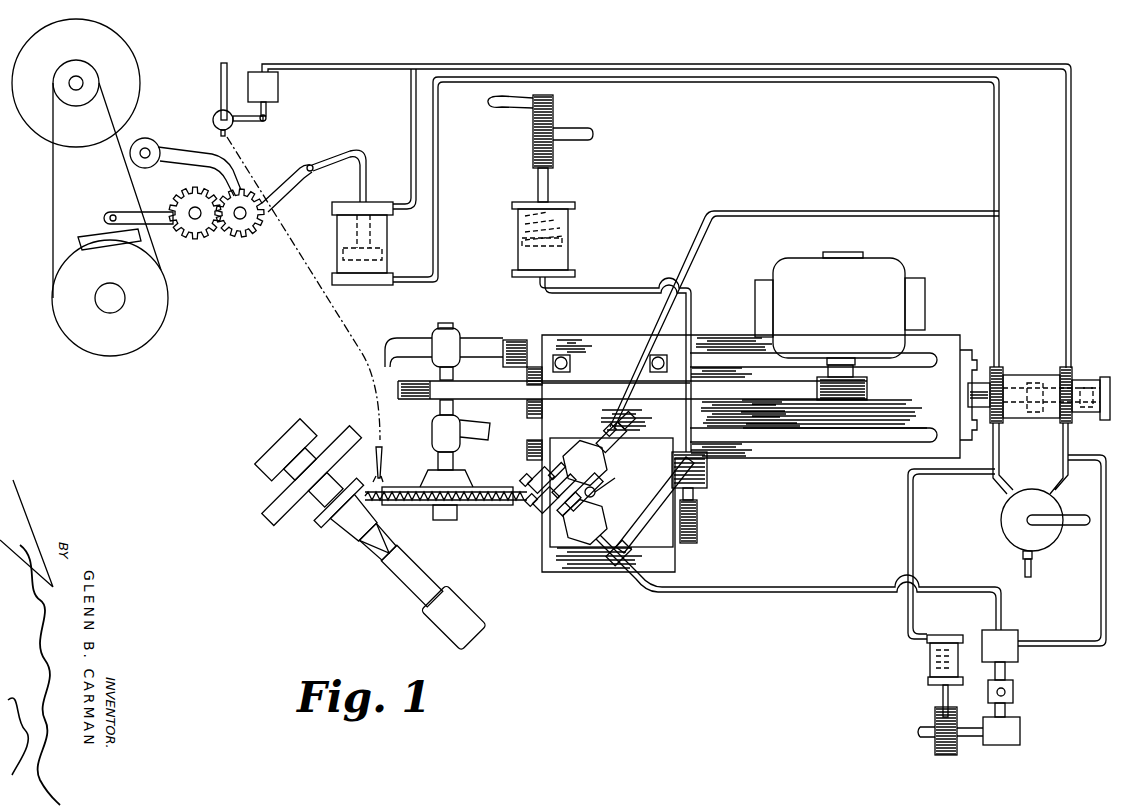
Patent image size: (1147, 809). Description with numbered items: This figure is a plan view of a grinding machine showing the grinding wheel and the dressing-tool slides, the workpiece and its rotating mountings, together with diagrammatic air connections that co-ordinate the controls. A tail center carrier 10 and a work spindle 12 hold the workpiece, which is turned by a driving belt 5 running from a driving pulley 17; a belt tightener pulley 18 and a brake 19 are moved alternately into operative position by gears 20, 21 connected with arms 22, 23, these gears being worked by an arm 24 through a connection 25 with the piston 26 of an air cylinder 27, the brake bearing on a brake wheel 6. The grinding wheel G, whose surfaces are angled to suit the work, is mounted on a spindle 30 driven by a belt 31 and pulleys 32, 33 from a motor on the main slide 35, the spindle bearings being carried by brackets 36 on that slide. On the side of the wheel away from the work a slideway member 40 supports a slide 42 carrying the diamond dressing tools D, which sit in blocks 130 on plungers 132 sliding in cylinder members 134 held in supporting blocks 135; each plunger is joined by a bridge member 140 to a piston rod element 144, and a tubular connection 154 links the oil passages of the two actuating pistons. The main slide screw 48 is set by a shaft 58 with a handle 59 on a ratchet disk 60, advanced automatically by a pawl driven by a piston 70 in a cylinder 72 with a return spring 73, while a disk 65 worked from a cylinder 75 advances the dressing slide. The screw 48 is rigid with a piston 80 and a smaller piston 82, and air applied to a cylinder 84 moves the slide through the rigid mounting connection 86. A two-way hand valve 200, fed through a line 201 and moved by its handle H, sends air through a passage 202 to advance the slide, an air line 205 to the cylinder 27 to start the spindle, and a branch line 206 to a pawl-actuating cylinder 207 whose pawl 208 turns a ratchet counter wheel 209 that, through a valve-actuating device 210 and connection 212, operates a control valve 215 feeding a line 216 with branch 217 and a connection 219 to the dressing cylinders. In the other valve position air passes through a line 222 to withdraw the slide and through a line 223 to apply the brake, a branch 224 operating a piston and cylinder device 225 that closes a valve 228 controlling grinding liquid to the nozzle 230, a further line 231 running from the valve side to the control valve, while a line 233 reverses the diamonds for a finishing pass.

The belt 5 is at (50, 220).
The brake wheel 6 is at (63, 258).
The tail center carrier 10 is at (415, 592).
The work spindle 12 is at (125, 298).
The driving pulley 17 is at (88, 105).
The belt tightener pulley 18 is at (152, 140).
The brake 19 is at (90, 230).
The gear 20 is at (198, 238).
The gear 21 is at (246, 236).
The arm 22 is at (200, 161).
The arm 23 is at (165, 202).
The arm 24 is at (283, 200).
The connection 25 is at (353, 153).
The piston 26 is at (373, 255).
The air cylinder 27 is at (350, 285).
The spindle 30 is at (453, 461).
The belt 31 is at (600, 395).
The pulley 32 is at (465, 384).
The pulley 33 is at (856, 400).
The main slide 35 is at (751, 412).
The brackets 36 is at (398, 338).
The mounting bracket or slideway member 40 is at (616, 387).
The slide 42 is at (577, 445).
The main slide screw 48 is at (985, 398).
The shaft 58 is at (592, 128).
The handle 59 is at (489, 100).
The disk or wheel 60 is at (533, 138).
The disk 65 is at (697, 531).
The piston 70 is at (522, 243).
The cylinder 72 is at (531, 239).
The spring 73 is at (522, 213).
The cylinder 75 is at (707, 469).
The piston 80 is at (1034, 382).
The piston 82 is at (1086, 386).
The cylinder 84 is at (1050, 368).
The rigid mounting connection 86 is at (977, 372).
The blocks 130 is at (535, 470).
The plungers 132 is at (558, 526).
The elongated cylinder members 134 is at (612, 452).
The supporting blocks 135 is at (575, 455).
The bridge member 140 is at (641, 418).
The piston rod element 144 is at (636, 436).
The tubular connection 154 is at (595, 496).
The two-way hand valve 200 is at (1023, 536).
The line 201 is at (1033, 573).
The passage 202 is at (1001, 447).
The air line 205 is at (438, 192).
The branch line 206 is at (907, 514).
The pawl-actuating cylinder 207 is at (927, 664).
The pawl 208 is at (940, 693).
The ratchet counter wheel 209 is at (935, 739).
The valve-actuating device 210 is at (1013, 745).
The connection 212 is at (1013, 696).
The control valve 215 is at (1018, 640).
The line 216 is at (848, 587).
The branch 217 is at (605, 288).
The connection 219 is at (665, 520).
The line 222 is at (1058, 479).
The line 223 is at (410, 92).
The branch 224 is at (322, 69).
The piston and cylinder device 225 is at (274, 93).
The valve 228 is at (218, 92).
The nozzle 230 is at (383, 465).
The pipe 231 is at (1086, 648).
The line 233 is at (844, 210).
The diamond dressing tool D is at (524, 479).
The grinding wheel G is at (488, 501).
The valve handle H is at (1070, 526).